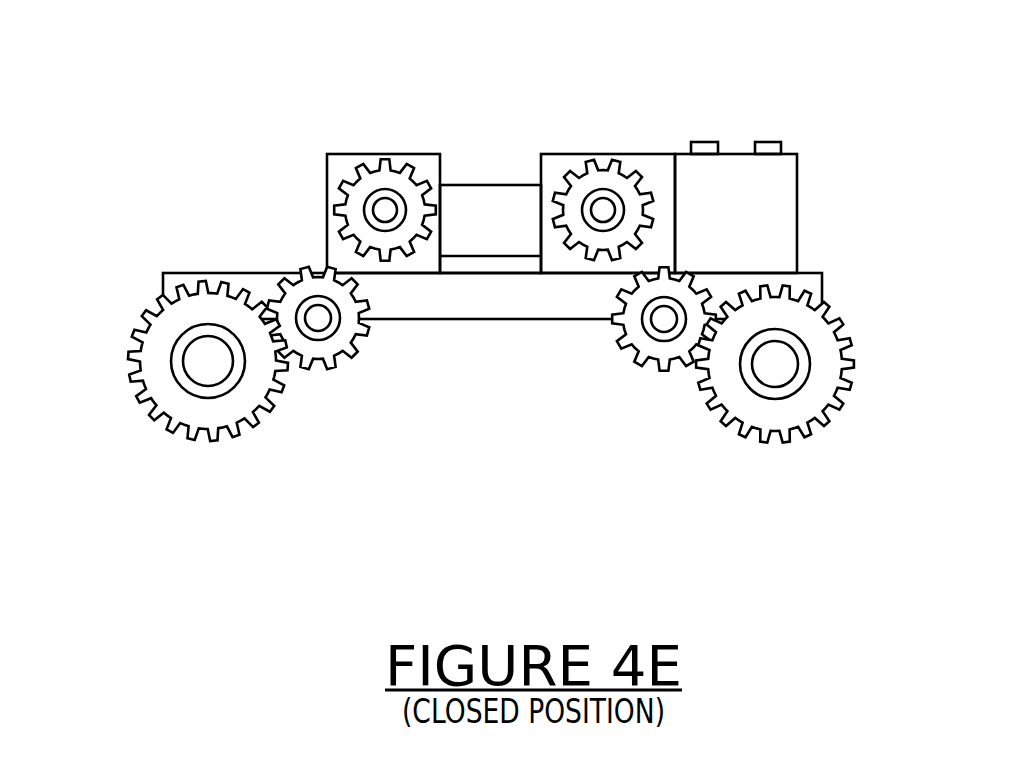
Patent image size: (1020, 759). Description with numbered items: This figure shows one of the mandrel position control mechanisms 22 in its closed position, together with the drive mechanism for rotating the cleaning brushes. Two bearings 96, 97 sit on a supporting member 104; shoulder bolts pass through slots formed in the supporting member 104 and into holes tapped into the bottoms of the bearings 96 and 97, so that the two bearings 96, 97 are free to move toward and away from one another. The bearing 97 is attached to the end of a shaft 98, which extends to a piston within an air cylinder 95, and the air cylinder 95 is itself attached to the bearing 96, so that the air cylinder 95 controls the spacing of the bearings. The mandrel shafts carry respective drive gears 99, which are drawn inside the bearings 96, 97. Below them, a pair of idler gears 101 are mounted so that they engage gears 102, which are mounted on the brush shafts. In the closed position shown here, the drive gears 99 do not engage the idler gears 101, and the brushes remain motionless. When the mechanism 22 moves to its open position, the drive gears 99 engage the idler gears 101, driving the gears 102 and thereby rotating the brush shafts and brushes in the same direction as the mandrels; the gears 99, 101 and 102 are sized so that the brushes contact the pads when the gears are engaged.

The mandrel position control mechanism 22 is at (177, 118).
The air cylinder 95 is at (797, 181).
The bearing 96 is at (653, 153).
The bearing 97 is at (423, 153).
The shaft 98 is at (486, 185).
The drive gear 99 is at (352, 183).
The idler gear 101 is at (350, 362).
The gear 102 is at (132, 390).
The supporting member 104 is at (182, 275).